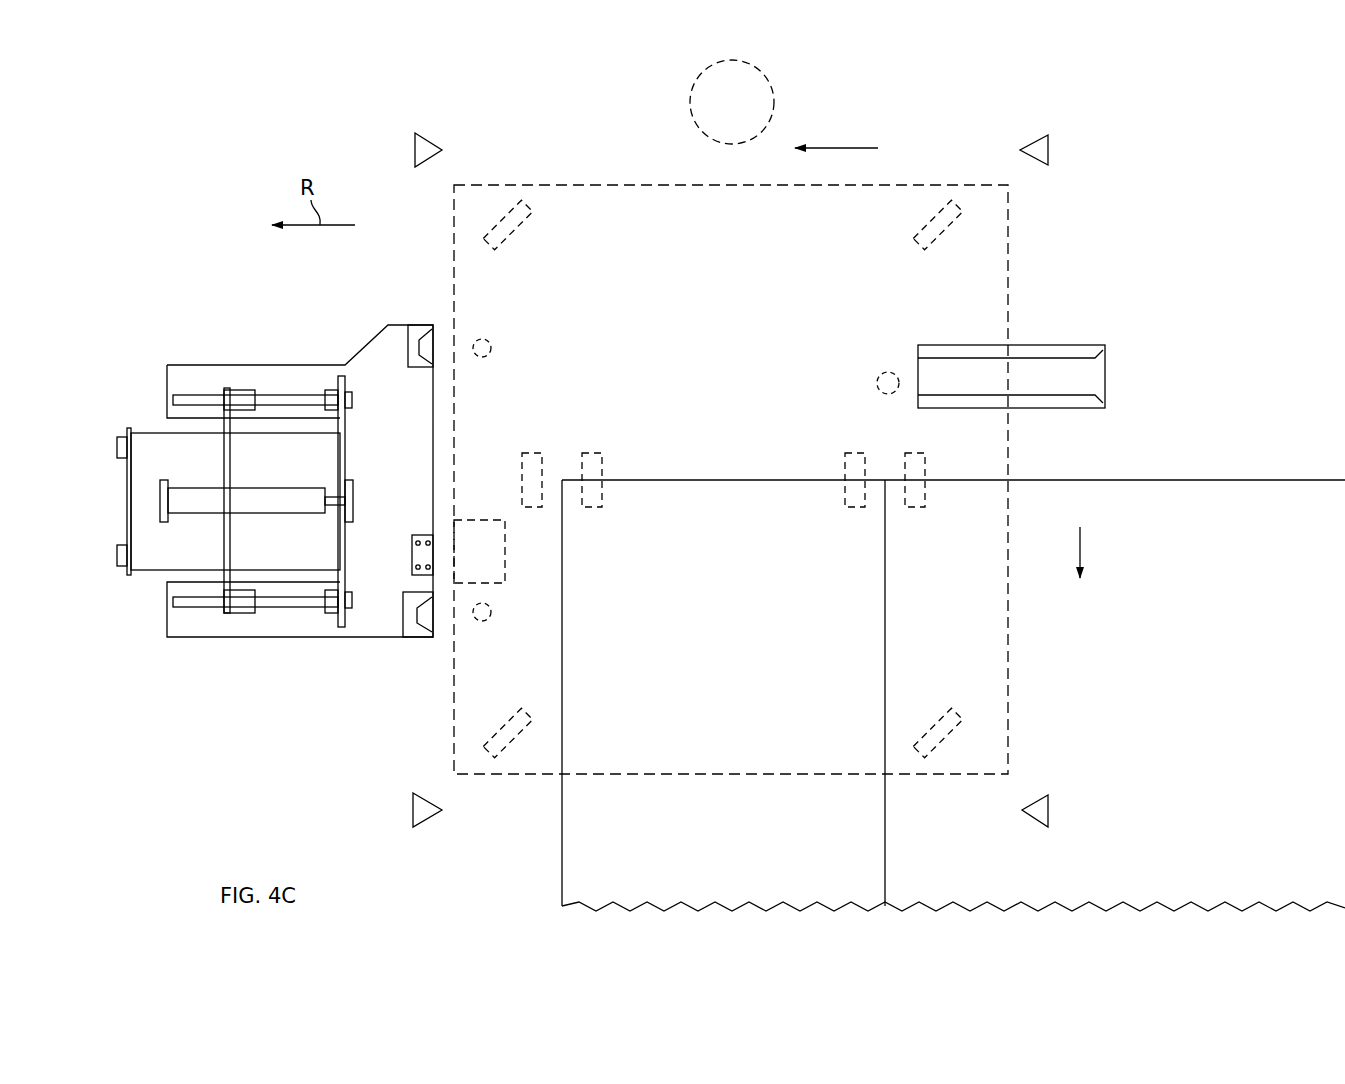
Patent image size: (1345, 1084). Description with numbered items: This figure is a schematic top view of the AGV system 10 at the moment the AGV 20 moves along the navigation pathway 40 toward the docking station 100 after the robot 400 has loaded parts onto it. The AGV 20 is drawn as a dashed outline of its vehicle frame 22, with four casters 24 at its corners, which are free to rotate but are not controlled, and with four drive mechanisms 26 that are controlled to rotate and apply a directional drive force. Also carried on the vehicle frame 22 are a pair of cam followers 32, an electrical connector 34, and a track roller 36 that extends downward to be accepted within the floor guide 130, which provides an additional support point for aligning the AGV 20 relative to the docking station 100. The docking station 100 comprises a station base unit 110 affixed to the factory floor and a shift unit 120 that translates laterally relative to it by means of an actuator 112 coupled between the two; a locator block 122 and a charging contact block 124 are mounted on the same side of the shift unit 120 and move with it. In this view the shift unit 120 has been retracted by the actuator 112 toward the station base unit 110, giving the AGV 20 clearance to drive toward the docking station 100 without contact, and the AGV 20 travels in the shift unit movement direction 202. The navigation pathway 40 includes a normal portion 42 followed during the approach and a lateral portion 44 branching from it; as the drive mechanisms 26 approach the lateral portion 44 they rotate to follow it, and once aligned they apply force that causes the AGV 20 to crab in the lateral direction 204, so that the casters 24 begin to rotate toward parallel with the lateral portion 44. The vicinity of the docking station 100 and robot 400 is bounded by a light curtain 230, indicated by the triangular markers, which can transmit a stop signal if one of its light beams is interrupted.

The AGV system 10 is at (190, 188).
The AGV 20 is at (922, 148).
The vehicle frame 22 is at (660, 185).
The casters 24 is at (520, 232).
The drive mechanism 26 is at (530, 452).
The cam followers 32 is at (491, 346).
The electrical connector 34 is at (470, 518).
The track roller 36 is at (880, 374).
The navigation pathway 40 is at (893, 811).
The normal portion 42 is at (1205, 482).
The lateral portion 44 is at (884, 825).
The docking station 100 is at (183, 645).
The station base unit 110 is at (128, 408).
The actuator 112 is at (192, 513).
The shift unit 120 is at (230, 316).
The locator block 122 is at (420, 325).
The charging contact block 124 is at (410, 556).
The floor guide 130 is at (1127, 361).
The shift unit movement direction 202 is at (844, 148).
The lateral direction 204 is at (1081, 545).
The light curtain 230 is at (414, 148).
The robot 400 is at (689, 100).